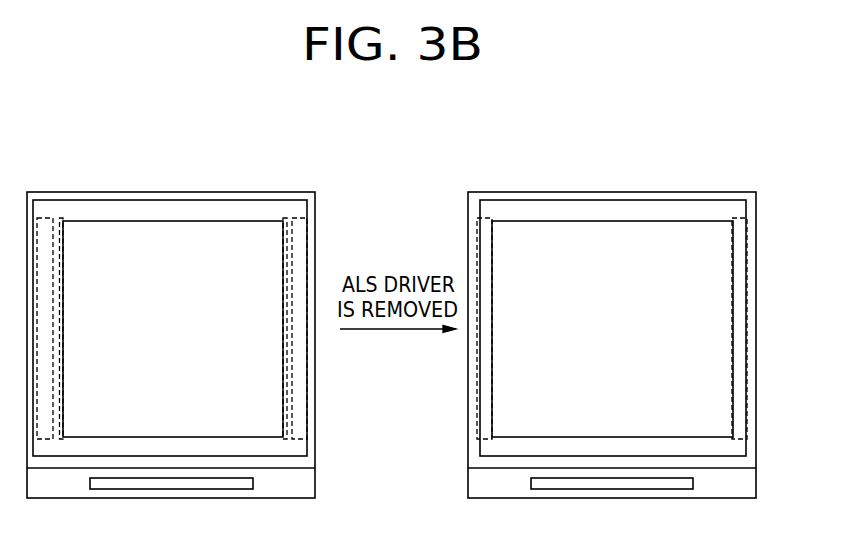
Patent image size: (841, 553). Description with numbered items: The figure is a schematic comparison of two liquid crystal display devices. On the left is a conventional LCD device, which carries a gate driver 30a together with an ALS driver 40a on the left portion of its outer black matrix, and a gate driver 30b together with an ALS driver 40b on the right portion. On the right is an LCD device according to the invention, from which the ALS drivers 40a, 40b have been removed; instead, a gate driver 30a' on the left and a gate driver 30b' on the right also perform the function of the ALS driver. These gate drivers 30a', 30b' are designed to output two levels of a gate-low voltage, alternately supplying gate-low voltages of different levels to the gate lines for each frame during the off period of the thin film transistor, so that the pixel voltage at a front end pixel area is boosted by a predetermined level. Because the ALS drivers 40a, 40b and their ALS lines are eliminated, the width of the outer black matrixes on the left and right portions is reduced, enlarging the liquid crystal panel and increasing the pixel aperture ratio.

The gate driver 30a is at (33, 289).
The ALS driver 40a is at (61, 219).
The ALS driver 40b is at (285, 219).
The gate driver 30b is at (312, 289).
The gate driver 30a' is at (472, 289).
The gate driver 30b' is at (754, 289).